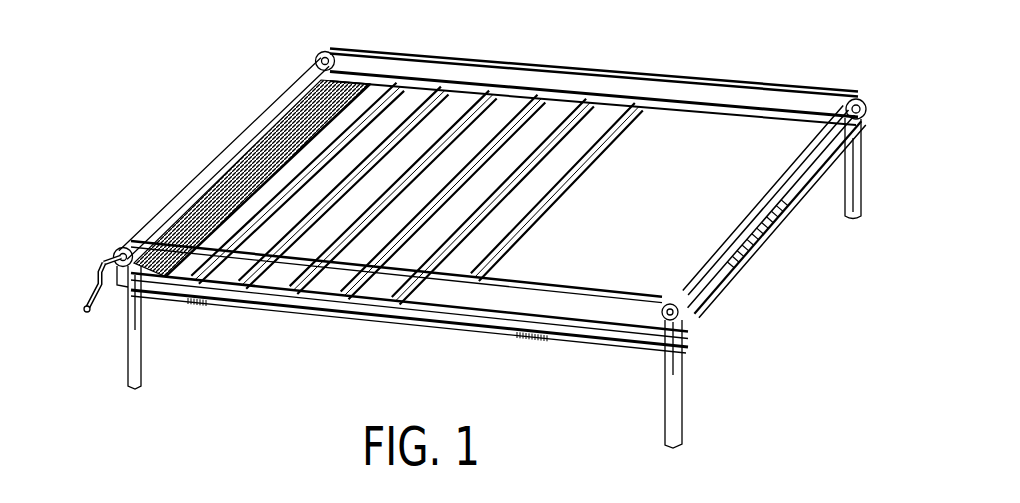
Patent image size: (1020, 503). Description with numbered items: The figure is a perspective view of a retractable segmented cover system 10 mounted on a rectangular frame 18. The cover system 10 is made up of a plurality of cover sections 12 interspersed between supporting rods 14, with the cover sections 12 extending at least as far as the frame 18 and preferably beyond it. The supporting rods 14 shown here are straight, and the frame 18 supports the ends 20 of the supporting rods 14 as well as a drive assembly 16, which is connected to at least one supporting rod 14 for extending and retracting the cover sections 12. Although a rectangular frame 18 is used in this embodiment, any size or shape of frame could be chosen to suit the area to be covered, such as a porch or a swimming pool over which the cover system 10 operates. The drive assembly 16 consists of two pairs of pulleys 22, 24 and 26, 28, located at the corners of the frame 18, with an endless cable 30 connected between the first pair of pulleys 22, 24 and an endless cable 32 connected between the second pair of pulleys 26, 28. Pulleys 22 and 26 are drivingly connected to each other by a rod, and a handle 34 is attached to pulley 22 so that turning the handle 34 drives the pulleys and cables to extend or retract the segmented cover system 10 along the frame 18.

The retractable segmented cover system 10 is at (281, 84).
The cover sections 12 is at (563, 163).
The supporting rods 14 is at (453, 130).
The drive assembly 16 is at (104, 252).
The rectangular frame 18 is at (810, 197).
The ends 20 is at (626, 124).
The pulley 22 is at (122, 248).
The pulley 24 is at (697, 311).
The pulley 26 is at (312, 50).
The pulley 28 is at (863, 99).
The endless cable 30 is at (487, 327).
The endless cable 32 is at (720, 78).
The handle 34 is at (93, 313).